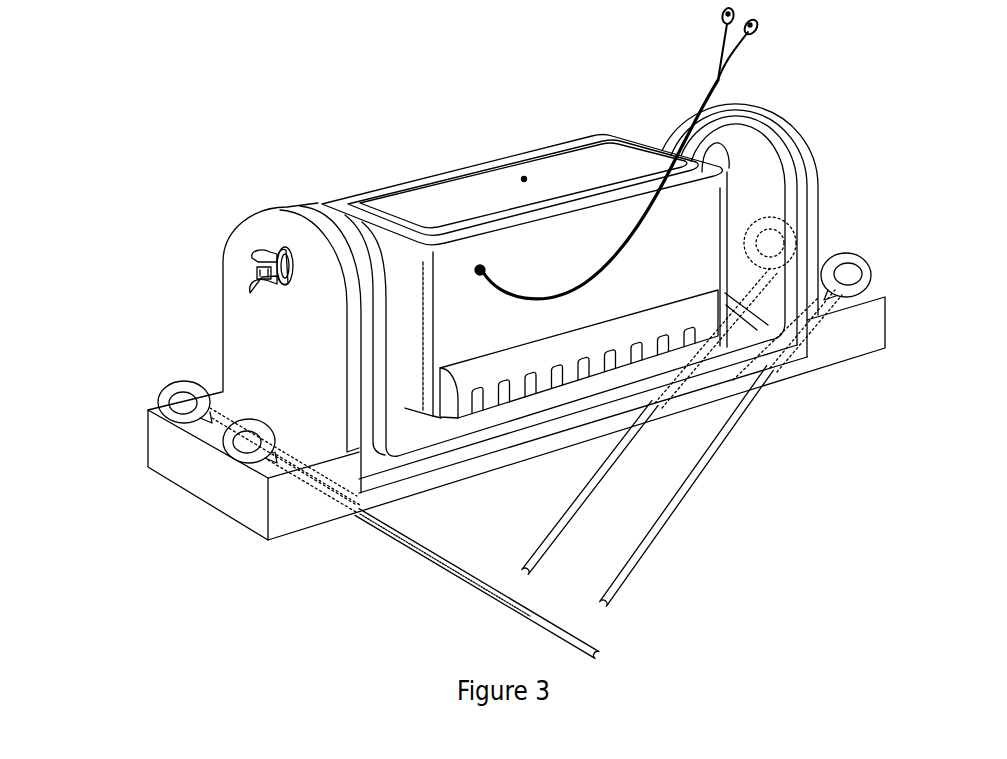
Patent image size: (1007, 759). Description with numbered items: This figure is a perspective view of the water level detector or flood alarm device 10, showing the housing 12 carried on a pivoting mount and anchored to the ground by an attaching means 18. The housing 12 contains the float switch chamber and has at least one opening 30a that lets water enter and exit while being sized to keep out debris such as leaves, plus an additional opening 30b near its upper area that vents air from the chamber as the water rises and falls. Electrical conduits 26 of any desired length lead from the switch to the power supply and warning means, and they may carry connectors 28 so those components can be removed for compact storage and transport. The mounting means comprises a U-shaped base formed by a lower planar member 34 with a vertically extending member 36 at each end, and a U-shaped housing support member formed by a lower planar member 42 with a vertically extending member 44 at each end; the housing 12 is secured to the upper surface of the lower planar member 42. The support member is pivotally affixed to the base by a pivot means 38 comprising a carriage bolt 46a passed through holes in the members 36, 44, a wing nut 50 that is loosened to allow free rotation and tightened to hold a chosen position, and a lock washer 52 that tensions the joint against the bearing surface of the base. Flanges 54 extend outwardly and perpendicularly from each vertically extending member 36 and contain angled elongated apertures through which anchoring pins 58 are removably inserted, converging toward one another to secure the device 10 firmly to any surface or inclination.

The water level detector or flood alarm device 10 is at (126, 208).
The housing 12 is at (430, 184).
The attaching means 18 is at (142, 392).
The electrical conduits 26 is at (641, 238).
The connectors 28 is at (760, 28).
The opening 30a is at (504, 399).
The additional opening 30b is at (526, 176).
The lower planar member 34 is at (453, 485).
The vertically extending member 36 is at (818, 195).
The pivot means 38 is at (238, 273).
The lower planar member 42 is at (704, 354).
The vertically extending member 44 is at (750, 166).
The bolt 46a is at (258, 277).
The wing nut 50 is at (255, 285).
The lock washer 52 is at (289, 283).
The flanges 54 is at (196, 452).
The anchoring pin 58 is at (434, 566).